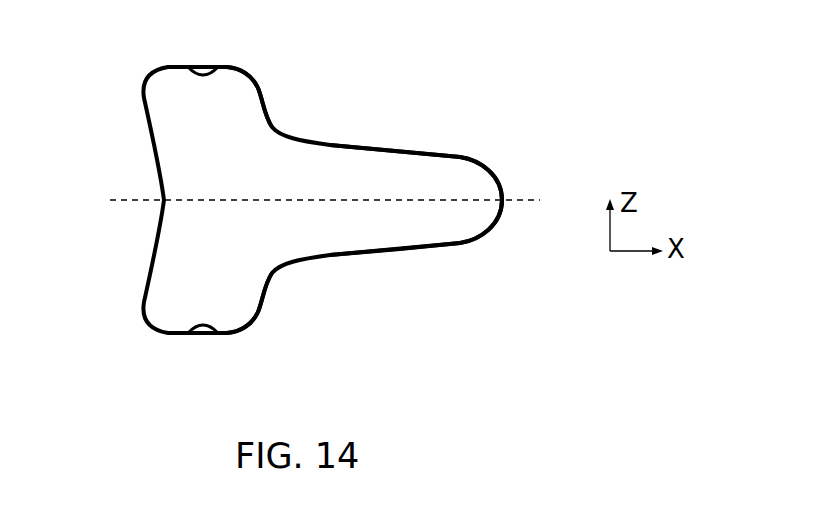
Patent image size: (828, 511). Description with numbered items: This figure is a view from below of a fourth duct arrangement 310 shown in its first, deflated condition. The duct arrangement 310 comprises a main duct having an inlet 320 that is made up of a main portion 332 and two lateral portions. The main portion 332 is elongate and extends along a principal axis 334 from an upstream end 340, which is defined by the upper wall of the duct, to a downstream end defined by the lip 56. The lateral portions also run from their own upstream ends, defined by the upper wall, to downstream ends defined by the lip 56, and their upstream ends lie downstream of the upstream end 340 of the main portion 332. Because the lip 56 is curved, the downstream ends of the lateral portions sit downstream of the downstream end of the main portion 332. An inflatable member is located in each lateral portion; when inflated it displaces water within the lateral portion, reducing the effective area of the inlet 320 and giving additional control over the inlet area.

The fourth duct arrangement 310 is at (382, 113).
The lip 56 is at (160, 195).
The main portion 332 is at (448, 173).
The upstream end of main portion 340 is at (500, 178).
The principal axis 334 is at (443, 220).
The inlet 320 is at (392, 252).